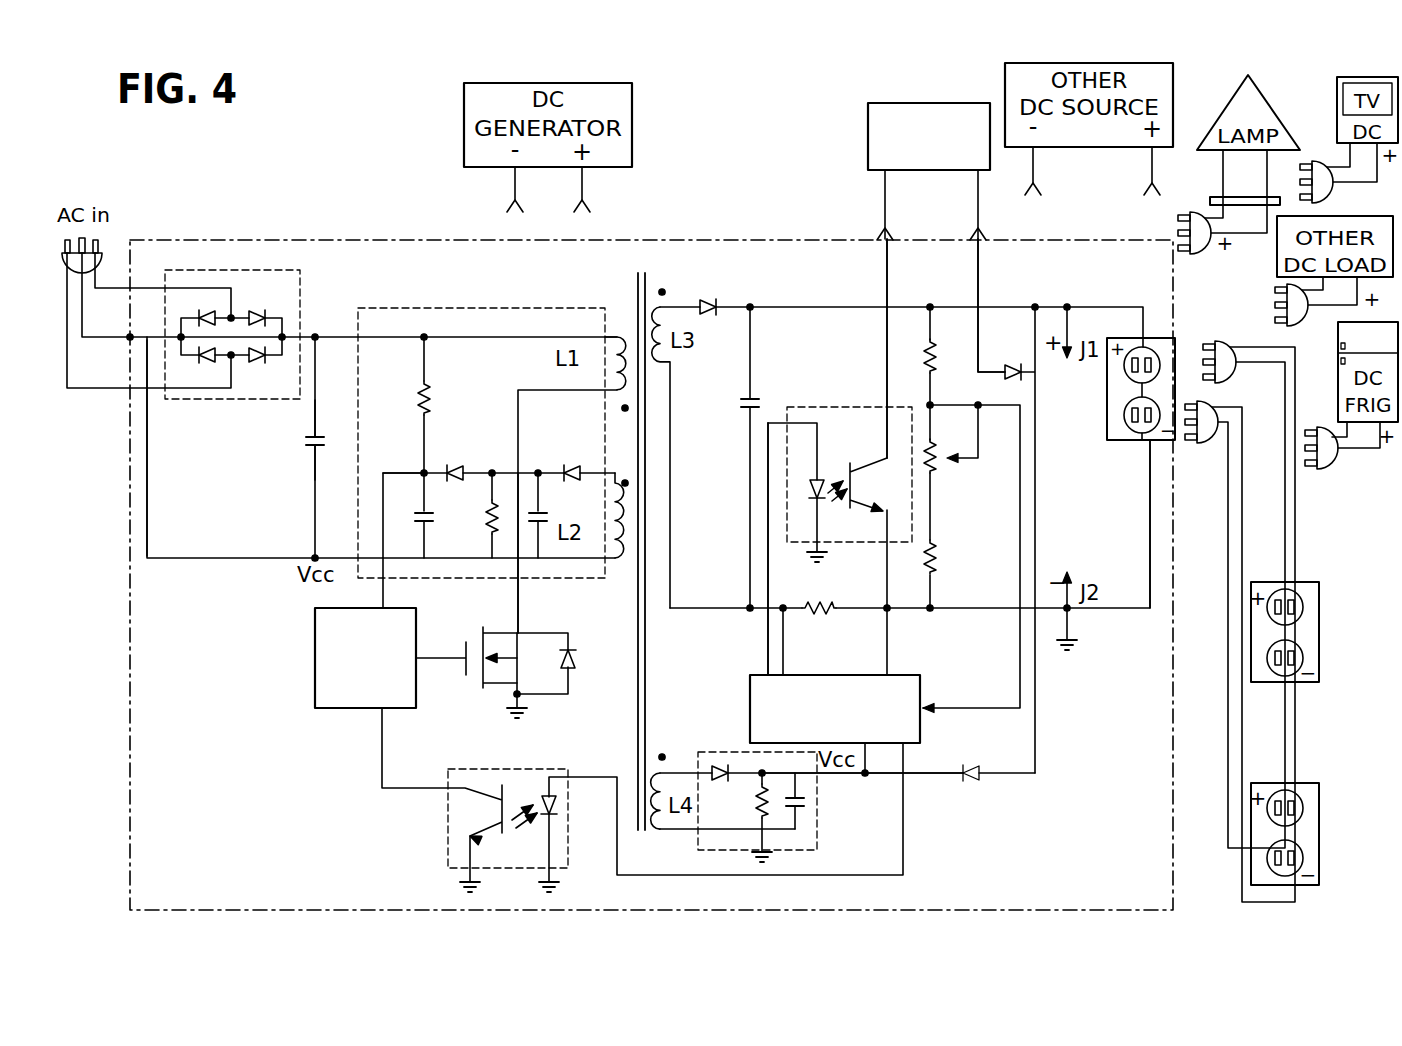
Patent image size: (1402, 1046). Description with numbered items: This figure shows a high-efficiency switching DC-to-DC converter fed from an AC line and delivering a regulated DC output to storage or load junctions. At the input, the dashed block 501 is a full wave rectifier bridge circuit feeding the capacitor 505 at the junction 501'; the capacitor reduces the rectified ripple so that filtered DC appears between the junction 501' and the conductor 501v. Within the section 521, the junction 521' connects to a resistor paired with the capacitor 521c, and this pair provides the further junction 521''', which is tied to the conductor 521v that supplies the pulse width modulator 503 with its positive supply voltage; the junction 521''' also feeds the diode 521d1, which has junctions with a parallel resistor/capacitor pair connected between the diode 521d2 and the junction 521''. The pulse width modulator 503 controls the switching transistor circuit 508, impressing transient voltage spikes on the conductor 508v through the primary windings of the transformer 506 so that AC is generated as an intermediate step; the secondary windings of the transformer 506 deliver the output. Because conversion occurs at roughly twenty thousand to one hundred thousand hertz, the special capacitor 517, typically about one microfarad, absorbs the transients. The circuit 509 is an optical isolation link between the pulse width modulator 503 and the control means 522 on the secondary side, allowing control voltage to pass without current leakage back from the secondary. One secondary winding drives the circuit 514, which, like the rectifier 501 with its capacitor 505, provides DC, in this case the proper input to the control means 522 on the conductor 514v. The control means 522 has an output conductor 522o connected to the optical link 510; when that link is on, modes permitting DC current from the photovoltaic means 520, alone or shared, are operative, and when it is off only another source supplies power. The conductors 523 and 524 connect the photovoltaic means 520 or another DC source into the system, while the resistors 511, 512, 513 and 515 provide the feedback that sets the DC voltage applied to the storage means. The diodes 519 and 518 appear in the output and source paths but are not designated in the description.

The full wave rectifier bridge circuit 501 is at (600, 510).
The junction 501' is at (330, 319).
The conductor 501v is at (181, 556).
The capacitor 505 is at (312, 445).
The section 521 is at (481, 424).
The junction 521' is at (449, 326).
The junction 521''' is at (395, 492).
The conductor 521v is at (385, 590).
The diode 521d1 is at (455, 464).
The diode 521d2 is at (572, 464).
The capacitor 521c is at (428, 512).
The junction 521'' is at (467, 521).
The pulse width modulator 503 is at (314, 628).
The switching transistor circuit 508 is at (500, 684).
The conductor 508v is at (517, 598).
The optical isolation link 509 is at (447, 830).
The transformer 506 is at (651, 290).
The rectifier diode 519 is at (702, 298).
The special capacitor 517 is at (756, 398).
The optical isolator link 510 is at (862, 407).
The conductor 523 is at (885, 284).
The conductor 524 is at (979, 280).
The resistor 512 is at (936, 348).
The resistor 515 is at (968, 458).
The resistor 513 is at (934, 548).
The diode 518 is at (1013, 364).
The output conductor 522o is at (770, 594).
The resistor 511 is at (815, 618).
The control means 522 is at (750, 698).
The circuit 514 is at (728, 752).
The conductor 514v is at (866, 776).
The photovoltaic means 520 is at (885, 103).